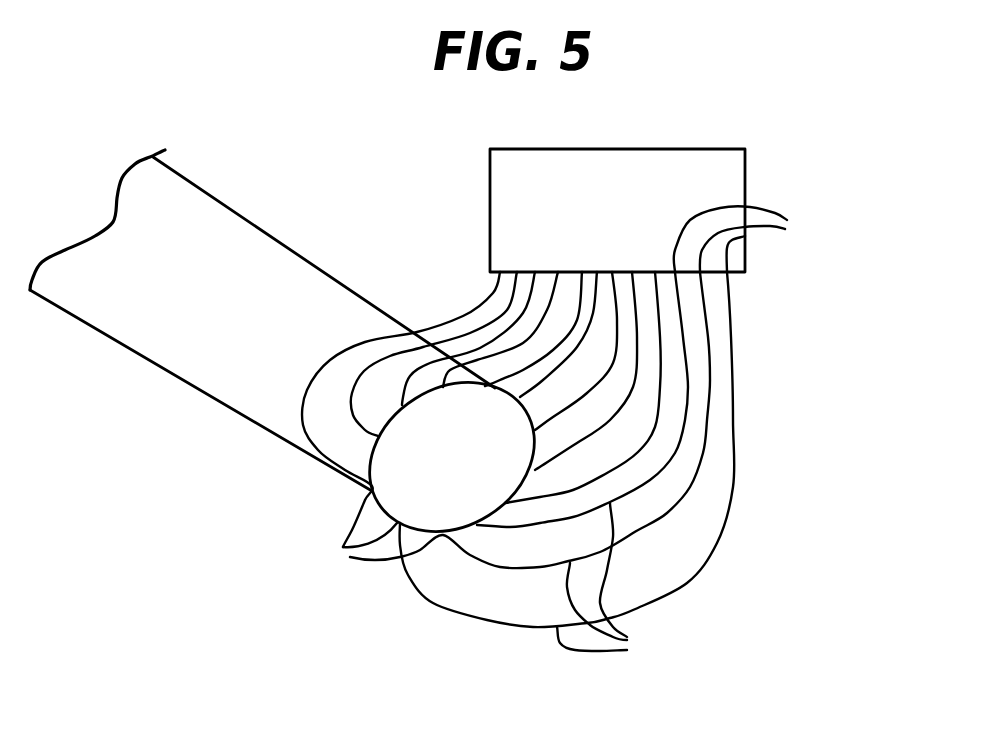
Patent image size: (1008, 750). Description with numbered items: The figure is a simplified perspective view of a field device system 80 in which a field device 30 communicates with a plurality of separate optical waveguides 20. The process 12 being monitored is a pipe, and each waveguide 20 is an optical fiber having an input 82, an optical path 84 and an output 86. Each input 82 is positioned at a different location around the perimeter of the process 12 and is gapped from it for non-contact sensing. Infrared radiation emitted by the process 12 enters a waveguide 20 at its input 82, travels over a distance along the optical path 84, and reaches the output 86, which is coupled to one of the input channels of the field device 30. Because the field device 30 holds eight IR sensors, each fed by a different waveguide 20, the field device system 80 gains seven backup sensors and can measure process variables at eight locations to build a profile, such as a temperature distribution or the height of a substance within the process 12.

The process 12 is at (180, 345).
The waveguides 20 is at (573, 431).
The field device 30 is at (657, 155).
The field device system 80 is at (603, 372).
The input 82 is at (345, 548).
The optical path 84 is at (620, 645).
The output 86 is at (775, 222).